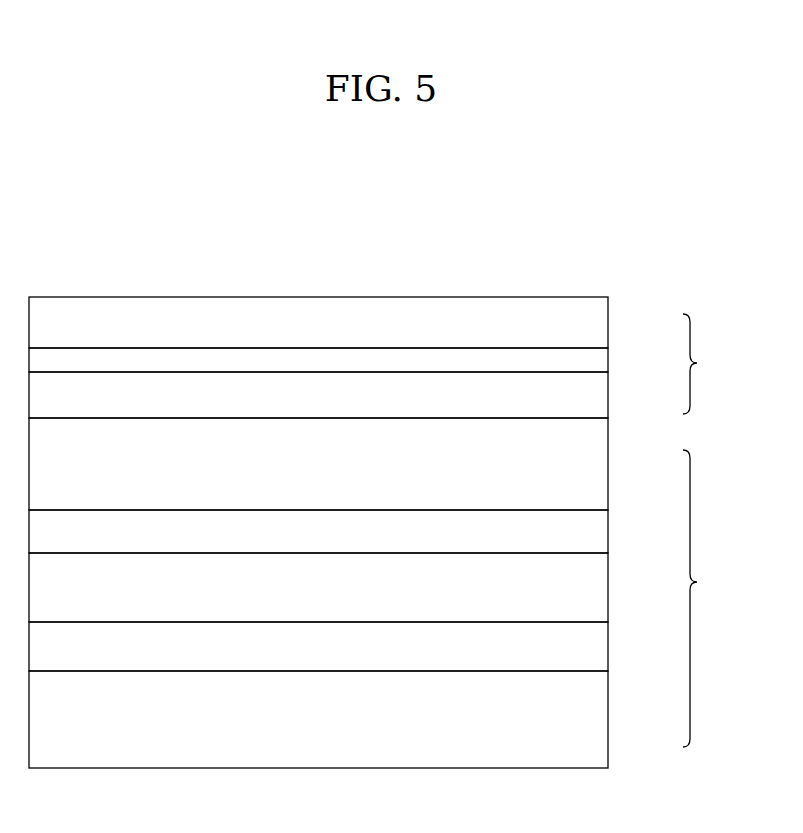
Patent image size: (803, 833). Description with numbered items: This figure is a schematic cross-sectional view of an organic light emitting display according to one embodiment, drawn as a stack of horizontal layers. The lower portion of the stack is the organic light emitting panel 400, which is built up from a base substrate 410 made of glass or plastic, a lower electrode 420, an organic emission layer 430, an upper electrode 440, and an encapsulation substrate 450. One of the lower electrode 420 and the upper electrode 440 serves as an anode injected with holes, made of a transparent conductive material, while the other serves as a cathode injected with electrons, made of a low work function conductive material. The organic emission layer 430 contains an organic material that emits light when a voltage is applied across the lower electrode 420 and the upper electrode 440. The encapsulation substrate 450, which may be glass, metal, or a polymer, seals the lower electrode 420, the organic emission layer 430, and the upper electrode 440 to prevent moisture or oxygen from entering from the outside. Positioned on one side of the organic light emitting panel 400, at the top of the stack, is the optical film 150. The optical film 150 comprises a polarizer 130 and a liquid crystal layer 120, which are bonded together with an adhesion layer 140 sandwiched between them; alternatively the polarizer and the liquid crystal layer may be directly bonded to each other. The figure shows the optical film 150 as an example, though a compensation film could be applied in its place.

The polarizer 130 is at (606, 326).
The adhesion layer 140 is at (606, 363).
The liquid crystal layer 120 is at (606, 398).
The optical film 150 is at (713, 364).
The encapsulation substrate 450 is at (606, 465).
The upper electrode 440 is at (606, 535).
The organic emission layer 430 is at (606, 591).
The lower electrode 420 is at (606, 648).
The base substrate 410 is at (606, 729).
The organic light emitting panel 400 is at (713, 598).